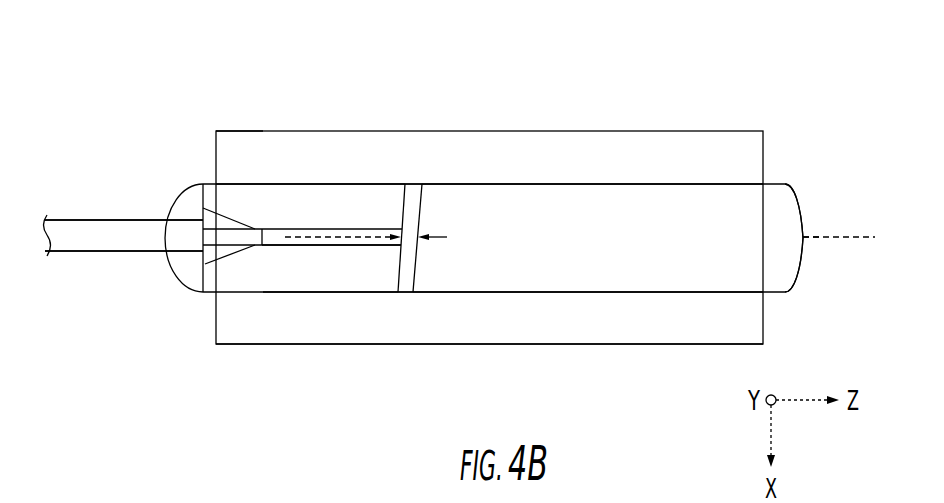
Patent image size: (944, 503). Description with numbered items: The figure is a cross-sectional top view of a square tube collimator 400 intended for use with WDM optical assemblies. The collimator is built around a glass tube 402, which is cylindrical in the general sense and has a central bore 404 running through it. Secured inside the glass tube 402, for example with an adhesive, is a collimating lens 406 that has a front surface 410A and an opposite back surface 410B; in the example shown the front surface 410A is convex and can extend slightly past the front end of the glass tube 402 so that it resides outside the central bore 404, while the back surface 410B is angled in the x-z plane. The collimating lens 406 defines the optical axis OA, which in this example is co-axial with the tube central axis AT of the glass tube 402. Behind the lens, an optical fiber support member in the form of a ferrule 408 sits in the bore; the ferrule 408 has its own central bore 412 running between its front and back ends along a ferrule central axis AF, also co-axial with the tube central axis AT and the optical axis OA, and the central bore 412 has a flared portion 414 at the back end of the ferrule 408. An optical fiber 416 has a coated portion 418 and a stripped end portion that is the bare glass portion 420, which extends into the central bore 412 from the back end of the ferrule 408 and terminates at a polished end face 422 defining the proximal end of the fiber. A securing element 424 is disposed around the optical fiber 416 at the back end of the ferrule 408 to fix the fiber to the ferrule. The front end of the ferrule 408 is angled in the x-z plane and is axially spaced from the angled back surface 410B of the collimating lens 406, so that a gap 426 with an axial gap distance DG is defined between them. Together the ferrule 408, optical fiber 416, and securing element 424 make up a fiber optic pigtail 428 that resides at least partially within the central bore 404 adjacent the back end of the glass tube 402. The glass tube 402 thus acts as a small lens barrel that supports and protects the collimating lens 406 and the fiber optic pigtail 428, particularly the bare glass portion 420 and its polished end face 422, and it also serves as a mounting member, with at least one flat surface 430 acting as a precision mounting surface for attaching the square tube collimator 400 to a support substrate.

The square tube collimator 400 is at (688, 66).
The glass tube 402 is at (567, 130).
The central bore 404 is at (663, 306).
The collimating lens 406 is at (530, 218).
The ferrule 408 is at (351, 210).
The front surface 410A is at (797, 268).
The back surface 410B is at (407, 248).
The central bore 412 is at (306, 260).
The flared portion 414 is at (214, 252).
The optical fiber 416 is at (100, 265).
The coated portion 418 is at (97, 230).
The bare glass portion 420 is at (279, 236).
The polished end face 422 is at (398, 293).
The securing element 424 is at (190, 196).
The gap 426 is at (418, 175).
The fiber optic pigtail 428 is at (235, 153).
The flat surface 430 is at (578, 345).
The ferrule central axis AF is at (335, 238).
The axial gap distance DG is at (431, 238).
The optical axis OA is at (862, 236).
The tube central axis AT is at (820, 236).